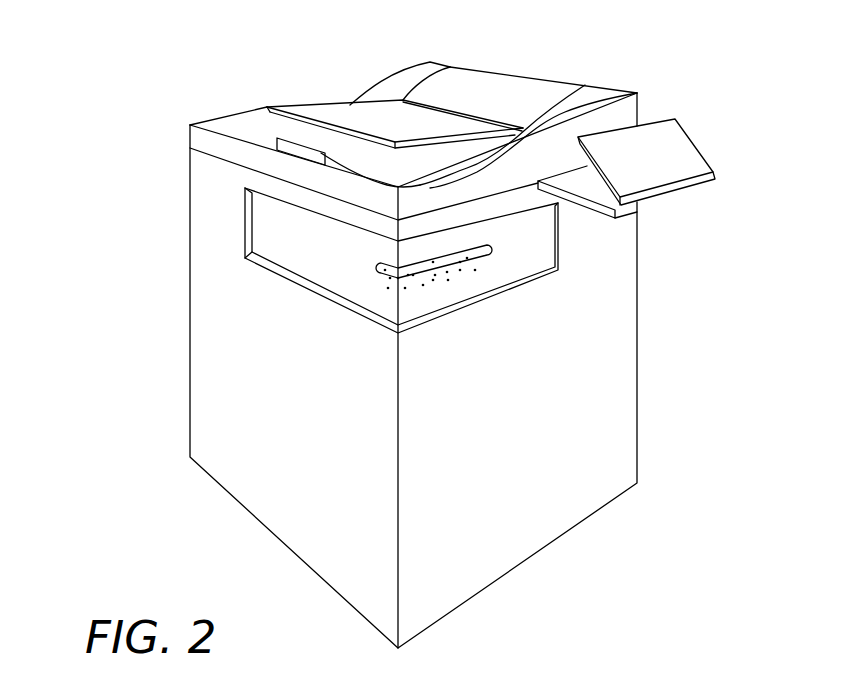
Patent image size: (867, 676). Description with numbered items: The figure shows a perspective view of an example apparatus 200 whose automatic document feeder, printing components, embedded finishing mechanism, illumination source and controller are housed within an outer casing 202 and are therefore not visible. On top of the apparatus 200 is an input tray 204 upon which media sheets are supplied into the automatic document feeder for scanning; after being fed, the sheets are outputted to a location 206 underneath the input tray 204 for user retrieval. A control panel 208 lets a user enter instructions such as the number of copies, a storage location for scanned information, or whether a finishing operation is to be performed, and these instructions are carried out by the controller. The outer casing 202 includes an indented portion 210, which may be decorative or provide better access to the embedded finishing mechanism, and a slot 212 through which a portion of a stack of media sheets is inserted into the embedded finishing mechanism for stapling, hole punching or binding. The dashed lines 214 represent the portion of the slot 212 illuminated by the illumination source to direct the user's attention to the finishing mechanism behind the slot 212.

The apparatus 200 is at (117, 55).
The outer casing 202 is at (191, 358).
The input tray 204 is at (366, 120).
The location 206 is at (283, 131).
The control panel 208 is at (688, 127).
The indented portion 210 is at (560, 253).
The slot 212 is at (490, 255).
The dashed lines 214 is at (423, 283).